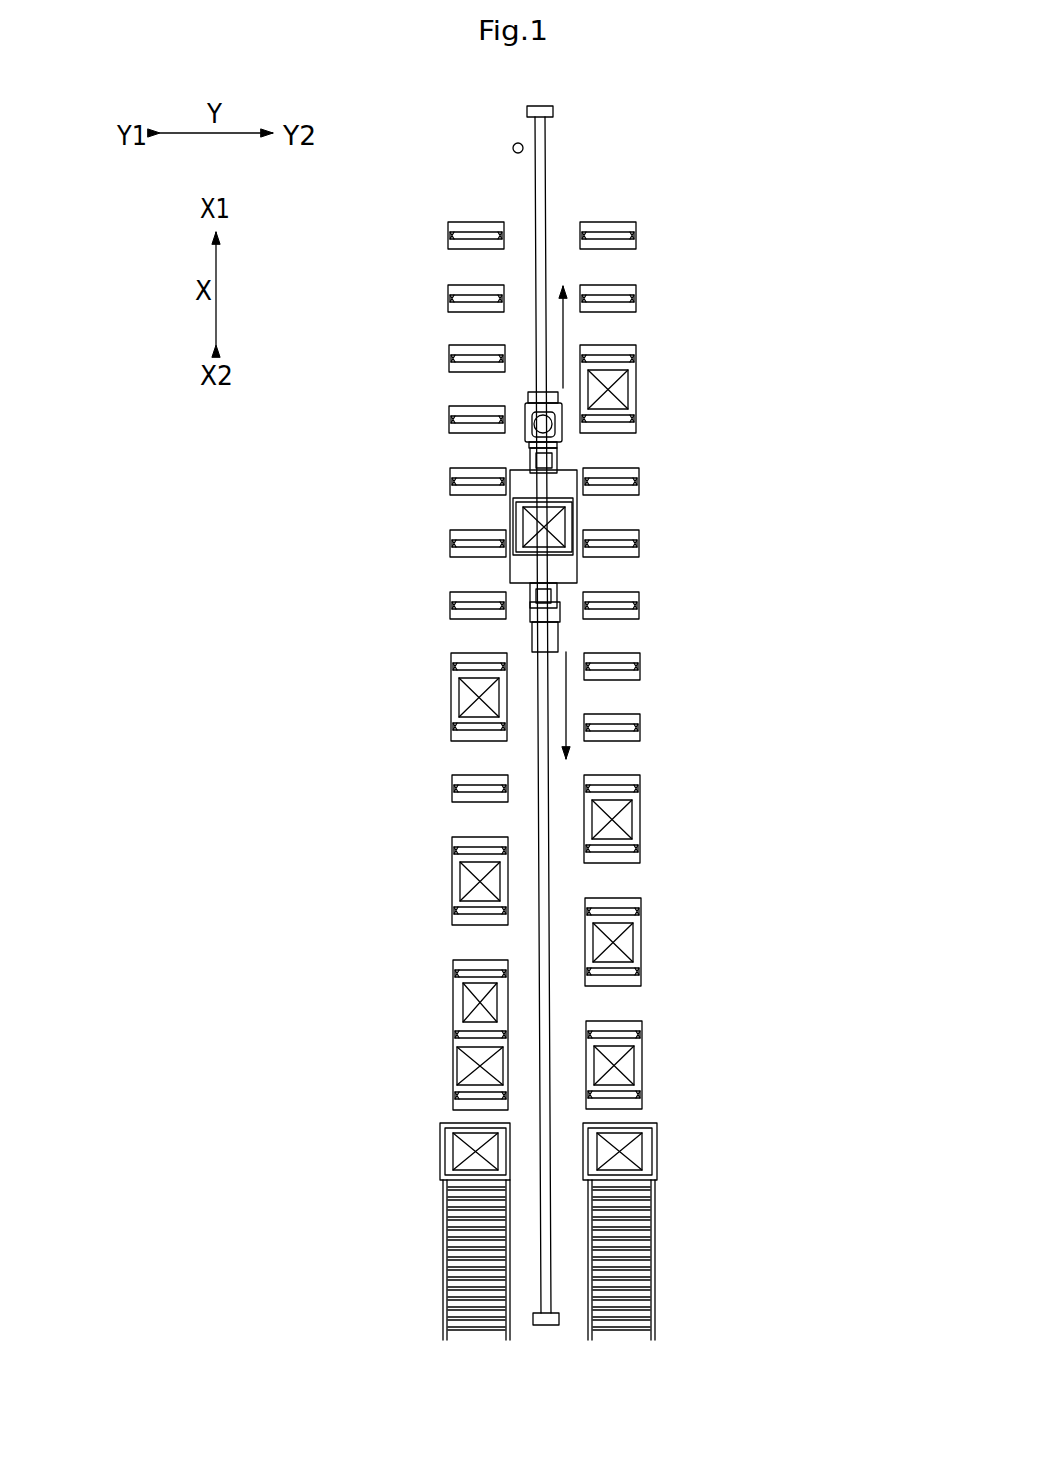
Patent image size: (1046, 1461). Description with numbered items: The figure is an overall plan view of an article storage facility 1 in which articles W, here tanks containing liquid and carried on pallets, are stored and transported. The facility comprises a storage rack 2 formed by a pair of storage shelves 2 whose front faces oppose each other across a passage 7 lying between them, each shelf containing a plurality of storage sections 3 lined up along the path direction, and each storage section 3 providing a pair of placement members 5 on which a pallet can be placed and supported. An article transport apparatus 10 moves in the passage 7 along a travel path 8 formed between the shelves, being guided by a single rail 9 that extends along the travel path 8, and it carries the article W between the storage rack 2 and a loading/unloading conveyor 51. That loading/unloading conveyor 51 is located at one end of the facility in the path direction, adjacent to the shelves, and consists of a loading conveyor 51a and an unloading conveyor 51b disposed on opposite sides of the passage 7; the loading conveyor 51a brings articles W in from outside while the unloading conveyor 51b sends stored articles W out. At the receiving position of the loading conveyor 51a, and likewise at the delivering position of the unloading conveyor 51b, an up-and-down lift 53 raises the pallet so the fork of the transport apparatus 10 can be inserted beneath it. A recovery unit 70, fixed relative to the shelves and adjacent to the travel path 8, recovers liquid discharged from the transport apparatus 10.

The article storage facility 1 is at (712, 232).
The storage rack 2 is at (414, 404).
The storage section 3 is at (444, 576).
The placement member 5 is at (633, 655).
The passage 7 is at (609, 701).
The travel path 8 is at (609, 701).
The rail 9 is at (590, 112).
The article transport apparatus 10 is at (486, 510).
The recovery unit 70 is at (515, 144).
The article W is at (547, 520).
The up-and-down lift 53 is at (440, 1142).
The loading/unloading conveyor 51 is at (547, 1260).
The loading conveyor 51a is at (640, 1322).
The unloading conveyor 51b is at (457, 1258).